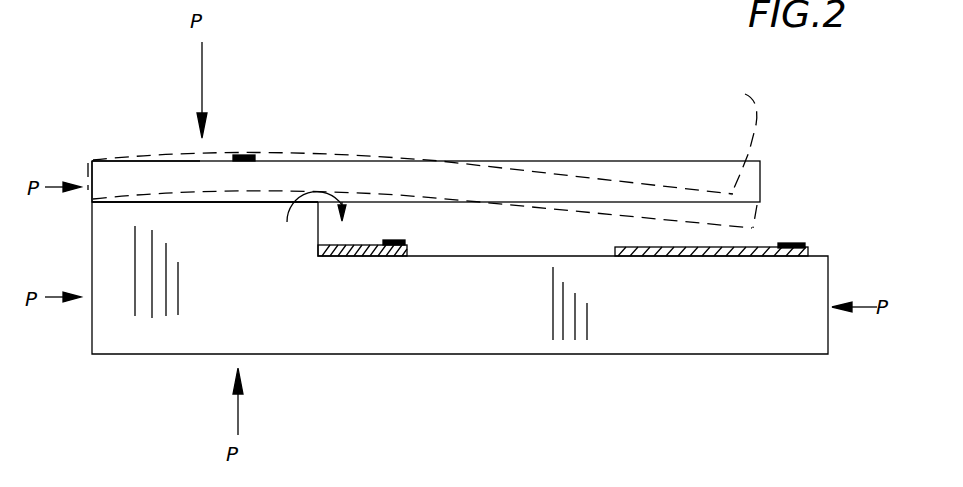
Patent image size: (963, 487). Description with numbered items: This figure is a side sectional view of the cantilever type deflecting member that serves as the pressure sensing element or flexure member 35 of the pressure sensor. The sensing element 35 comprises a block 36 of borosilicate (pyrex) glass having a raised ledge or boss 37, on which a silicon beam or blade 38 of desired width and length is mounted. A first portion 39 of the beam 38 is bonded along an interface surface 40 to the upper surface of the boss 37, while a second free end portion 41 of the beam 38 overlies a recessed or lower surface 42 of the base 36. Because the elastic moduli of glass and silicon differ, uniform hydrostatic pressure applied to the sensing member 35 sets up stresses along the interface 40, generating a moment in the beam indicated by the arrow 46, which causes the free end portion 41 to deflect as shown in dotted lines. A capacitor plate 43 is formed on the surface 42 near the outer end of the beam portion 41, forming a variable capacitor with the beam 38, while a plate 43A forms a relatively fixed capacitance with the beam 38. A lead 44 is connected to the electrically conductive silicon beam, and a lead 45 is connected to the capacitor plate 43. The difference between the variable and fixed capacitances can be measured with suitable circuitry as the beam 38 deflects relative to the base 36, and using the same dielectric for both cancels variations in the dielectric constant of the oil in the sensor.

The pressure sensing element 35 is at (152, 363).
The block 36 is at (426, 323).
The boss 37 is at (110, 238).
The beam 38 is at (578, 160).
The first portion 39 is at (142, 177).
The interface surface 40 is at (200, 202).
The second free end portion 41 is at (688, 175).
The recessed surface 42 is at (425, 249).
The capacitor plate 43 is at (682, 250).
The plate 43A is at (358, 243).
The lead 44 is at (248, 155).
The lead 45 is at (793, 243).
The arrow 46 is at (322, 181).